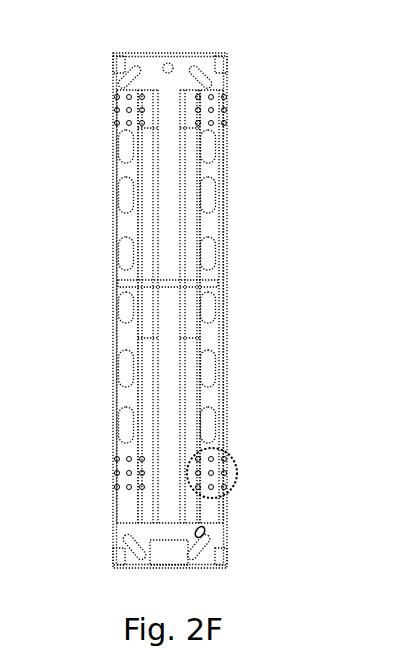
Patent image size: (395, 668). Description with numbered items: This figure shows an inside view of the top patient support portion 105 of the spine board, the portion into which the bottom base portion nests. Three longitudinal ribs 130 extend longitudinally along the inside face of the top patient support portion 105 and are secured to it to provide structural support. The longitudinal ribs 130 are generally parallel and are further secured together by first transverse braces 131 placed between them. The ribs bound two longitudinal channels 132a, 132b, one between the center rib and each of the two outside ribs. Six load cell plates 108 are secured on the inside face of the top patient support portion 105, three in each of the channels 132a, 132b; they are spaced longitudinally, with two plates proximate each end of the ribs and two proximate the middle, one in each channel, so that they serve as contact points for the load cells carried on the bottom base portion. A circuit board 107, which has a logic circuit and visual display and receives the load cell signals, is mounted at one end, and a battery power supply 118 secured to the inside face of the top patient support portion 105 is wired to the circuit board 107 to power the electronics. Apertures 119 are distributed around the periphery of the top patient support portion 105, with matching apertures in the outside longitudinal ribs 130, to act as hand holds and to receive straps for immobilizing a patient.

The top patient support portion 105 is at (230, 390).
The circuit board 107 is at (172, 557).
The load cell plates 108 is at (263, 503).
The battery power supply 118 is at (205, 531).
The apertures 119 is at (233, 462).
The longitudinal ribs 130 is at (130, 228).
The first transverse braces 131 is at (205, 283).
The longitudinal channel 132a is at (150, 172).
The longitudinal channel 132b is at (205, 173).